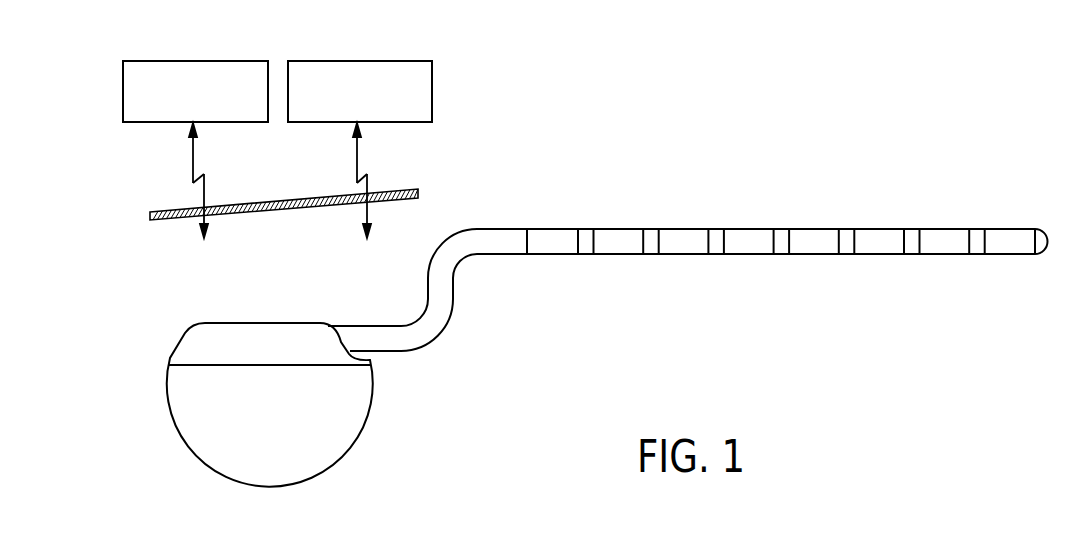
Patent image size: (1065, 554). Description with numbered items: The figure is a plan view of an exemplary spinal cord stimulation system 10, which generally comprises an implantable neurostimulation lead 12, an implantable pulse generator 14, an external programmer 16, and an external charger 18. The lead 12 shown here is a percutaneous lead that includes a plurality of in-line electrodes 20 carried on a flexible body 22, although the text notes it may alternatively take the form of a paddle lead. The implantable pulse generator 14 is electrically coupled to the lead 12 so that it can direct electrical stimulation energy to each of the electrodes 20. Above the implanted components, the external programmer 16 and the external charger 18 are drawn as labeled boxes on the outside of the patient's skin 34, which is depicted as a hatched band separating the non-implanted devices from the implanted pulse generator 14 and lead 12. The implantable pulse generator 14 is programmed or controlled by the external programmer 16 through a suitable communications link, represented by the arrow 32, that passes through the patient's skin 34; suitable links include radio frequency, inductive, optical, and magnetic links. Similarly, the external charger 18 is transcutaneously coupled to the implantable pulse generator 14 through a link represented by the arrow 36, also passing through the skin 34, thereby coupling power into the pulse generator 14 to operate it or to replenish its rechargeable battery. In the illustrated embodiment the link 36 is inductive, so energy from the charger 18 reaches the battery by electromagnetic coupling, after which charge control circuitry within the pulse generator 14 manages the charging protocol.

The SCS system 10 is at (683, 134).
The implantable neurostimulation lead 12 is at (806, 219).
The implantable pulse generator 14 is at (367, 432).
The external programmer 16 is at (180, 60).
The external charger 18 is at (350, 60).
The in-line electrodes 20 is at (745, 249).
The flexible body 22 is at (648, 232).
The communications link 32 is at (193, 165).
The patient's skin 34 is at (398, 198).
The link 36 is at (357, 165).